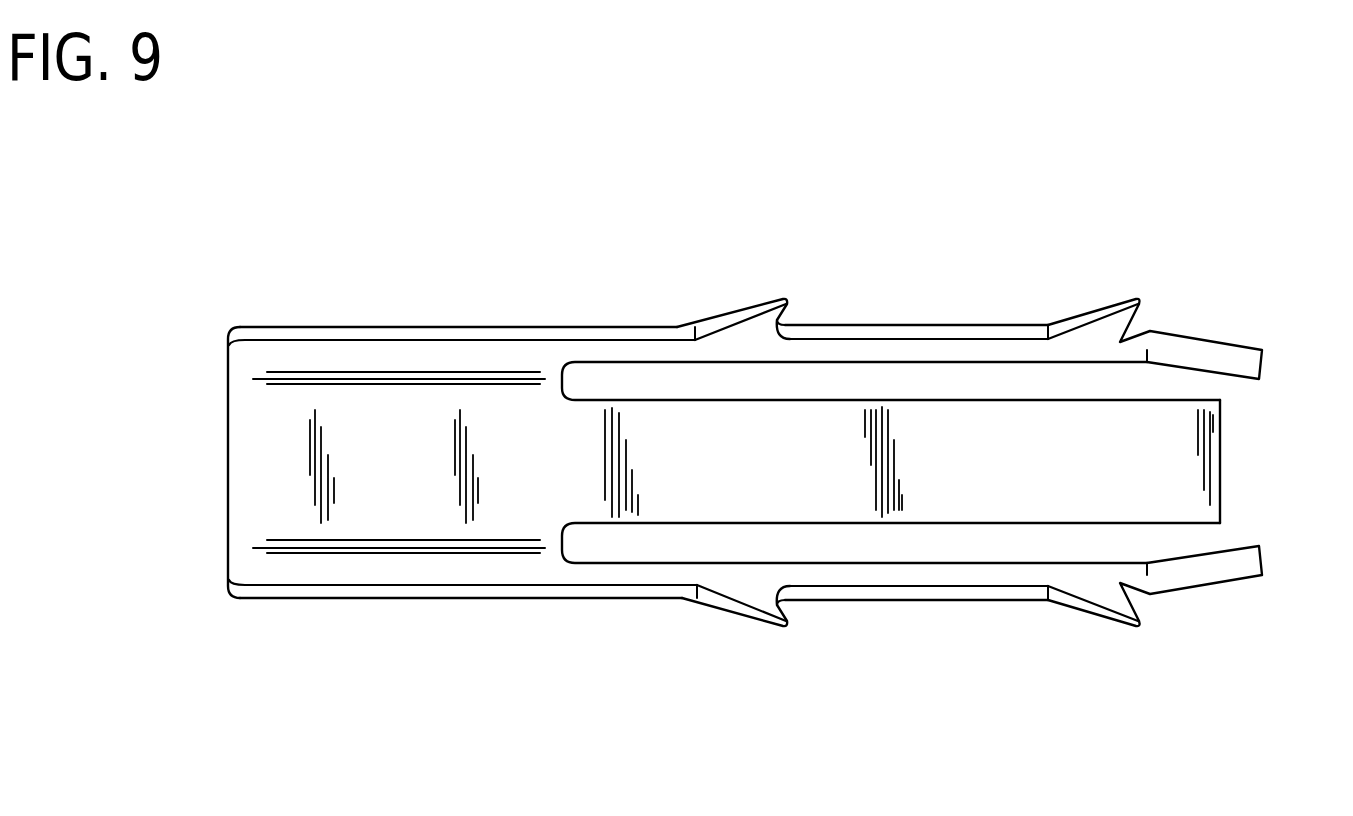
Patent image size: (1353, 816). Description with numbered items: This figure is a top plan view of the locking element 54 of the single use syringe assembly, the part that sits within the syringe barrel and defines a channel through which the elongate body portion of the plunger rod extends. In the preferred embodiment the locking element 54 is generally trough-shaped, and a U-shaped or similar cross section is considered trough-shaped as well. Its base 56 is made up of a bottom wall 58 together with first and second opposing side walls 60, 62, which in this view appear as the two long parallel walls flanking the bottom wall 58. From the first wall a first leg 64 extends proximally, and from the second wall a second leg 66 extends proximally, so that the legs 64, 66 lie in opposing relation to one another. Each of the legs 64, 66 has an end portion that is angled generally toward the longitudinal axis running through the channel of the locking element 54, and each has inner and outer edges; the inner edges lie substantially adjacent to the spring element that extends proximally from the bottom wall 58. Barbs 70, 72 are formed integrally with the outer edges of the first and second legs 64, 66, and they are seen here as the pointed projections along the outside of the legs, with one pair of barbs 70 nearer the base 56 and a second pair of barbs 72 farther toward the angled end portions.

The locking element 54 is at (598, 196).
The base 56 is at (314, 624).
The bottom wall 58 is at (270, 478).
The first side wall 60 is at (478, 593).
The second side wall 62 is at (338, 333).
The first leg 64 is at (922, 577).
The second leg 66 is at (920, 333).
The barb 70 is at (743, 312).
The barb 72 is at (1100, 312).